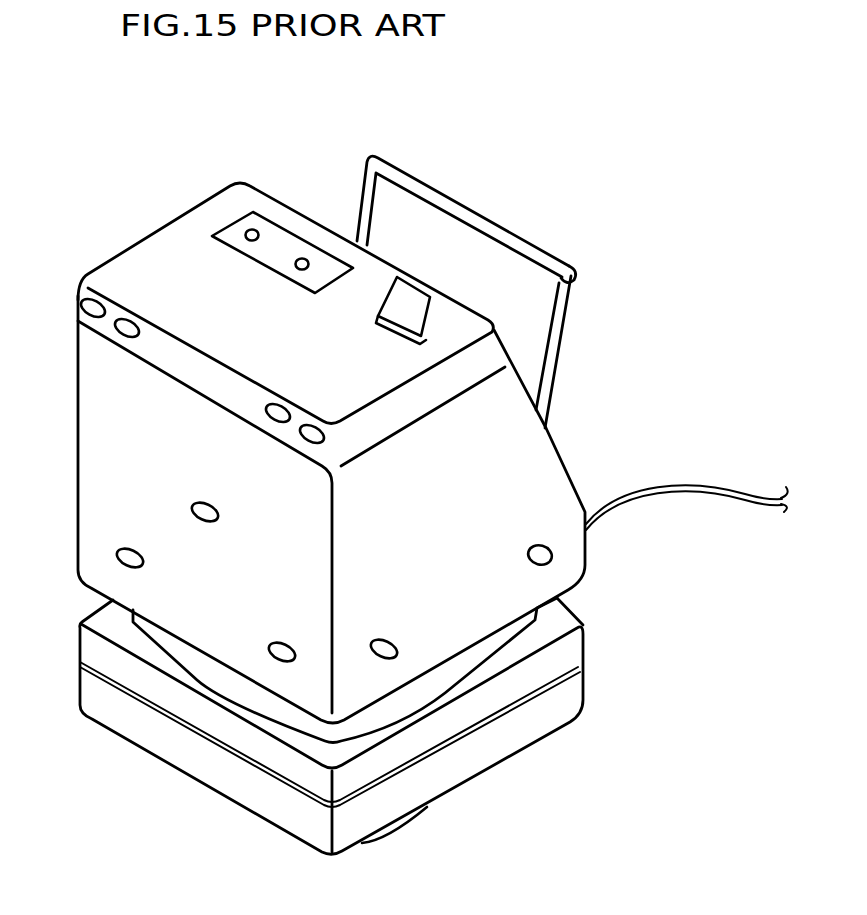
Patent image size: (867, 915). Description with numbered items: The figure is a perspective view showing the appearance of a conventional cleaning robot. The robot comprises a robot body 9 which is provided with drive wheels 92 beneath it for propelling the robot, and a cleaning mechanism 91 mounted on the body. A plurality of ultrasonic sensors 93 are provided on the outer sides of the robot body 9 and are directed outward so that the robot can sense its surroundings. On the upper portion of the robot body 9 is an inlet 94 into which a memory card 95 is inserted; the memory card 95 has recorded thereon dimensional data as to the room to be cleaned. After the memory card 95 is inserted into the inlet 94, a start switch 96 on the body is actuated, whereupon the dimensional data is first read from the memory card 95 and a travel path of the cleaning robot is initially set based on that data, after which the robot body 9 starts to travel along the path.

The robot body 9 is at (96, 562).
The cleaning mechanism 91 is at (137, 729).
The drive wheels 92 is at (401, 828).
The ultrasonic sensors 93 is at (93, 306).
The inlet 94 is at (427, 340).
The memory card 95 is at (408, 298).
The start switch 96 is at (250, 232).